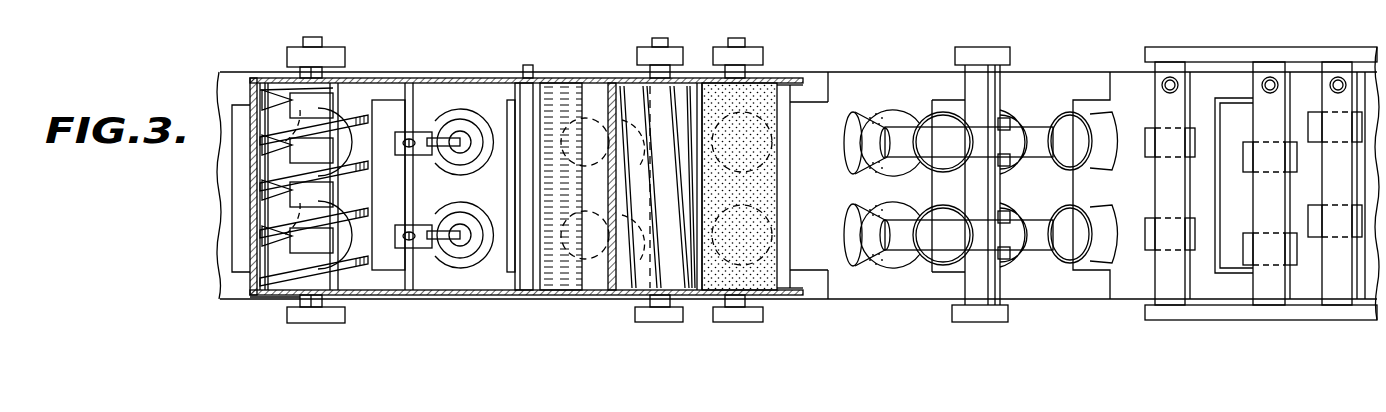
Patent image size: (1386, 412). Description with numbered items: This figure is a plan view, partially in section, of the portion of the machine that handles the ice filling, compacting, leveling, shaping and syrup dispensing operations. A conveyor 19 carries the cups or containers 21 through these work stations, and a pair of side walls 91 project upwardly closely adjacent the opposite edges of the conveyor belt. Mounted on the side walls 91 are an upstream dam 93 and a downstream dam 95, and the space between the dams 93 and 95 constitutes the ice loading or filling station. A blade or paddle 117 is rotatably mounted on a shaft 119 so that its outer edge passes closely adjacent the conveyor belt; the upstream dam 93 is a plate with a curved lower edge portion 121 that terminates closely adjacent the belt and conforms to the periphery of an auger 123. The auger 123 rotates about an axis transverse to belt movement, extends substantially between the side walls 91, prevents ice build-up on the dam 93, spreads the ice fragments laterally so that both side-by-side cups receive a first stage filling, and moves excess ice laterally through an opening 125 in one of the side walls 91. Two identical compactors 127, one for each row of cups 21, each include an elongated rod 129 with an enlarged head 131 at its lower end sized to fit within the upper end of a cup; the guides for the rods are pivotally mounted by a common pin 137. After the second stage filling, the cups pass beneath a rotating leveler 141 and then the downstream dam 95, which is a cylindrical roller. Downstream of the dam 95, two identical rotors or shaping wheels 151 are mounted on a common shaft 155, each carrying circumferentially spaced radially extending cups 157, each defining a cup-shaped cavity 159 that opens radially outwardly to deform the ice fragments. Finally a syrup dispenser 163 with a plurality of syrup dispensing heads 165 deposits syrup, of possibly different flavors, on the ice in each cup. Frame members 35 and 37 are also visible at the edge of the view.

The conveyor 19 is at (844, 62).
The cups or containers 21 is at (285, 248).
The frame member 35 is at (160, 7).
The frame member 37 is at (195, 7).
The side walls 91 is at (487, 80).
The upstream dam 93 is at (250, 155).
The downstream dam 95 is at (763, 90).
The blade or paddle 117 is at (562, 87).
The shaft 119 is at (530, 63).
The curved lower edge portion 121 is at (247, 200).
The auger 123 is at (347, 107).
The opening 125 is at (278, 306).
The compactor 127 is at (422, 205).
The elongated rod 129 is at (450, 242).
The enlarged head 131 is at (465, 143).
The common pin 137 is at (417, 100).
The leveler 141 is at (680, 92).
The rotor or shaping wheel 151 is at (1026, 126).
The common shaft 155 is at (973, 100).
The radially extending cup 157 is at (868, 216).
The cup-shaped cavity 159 is at (1065, 218).
The syrup dispenser 163 is at (1274, 46).
The syrup dispensing heads 165 is at (1188, 128).